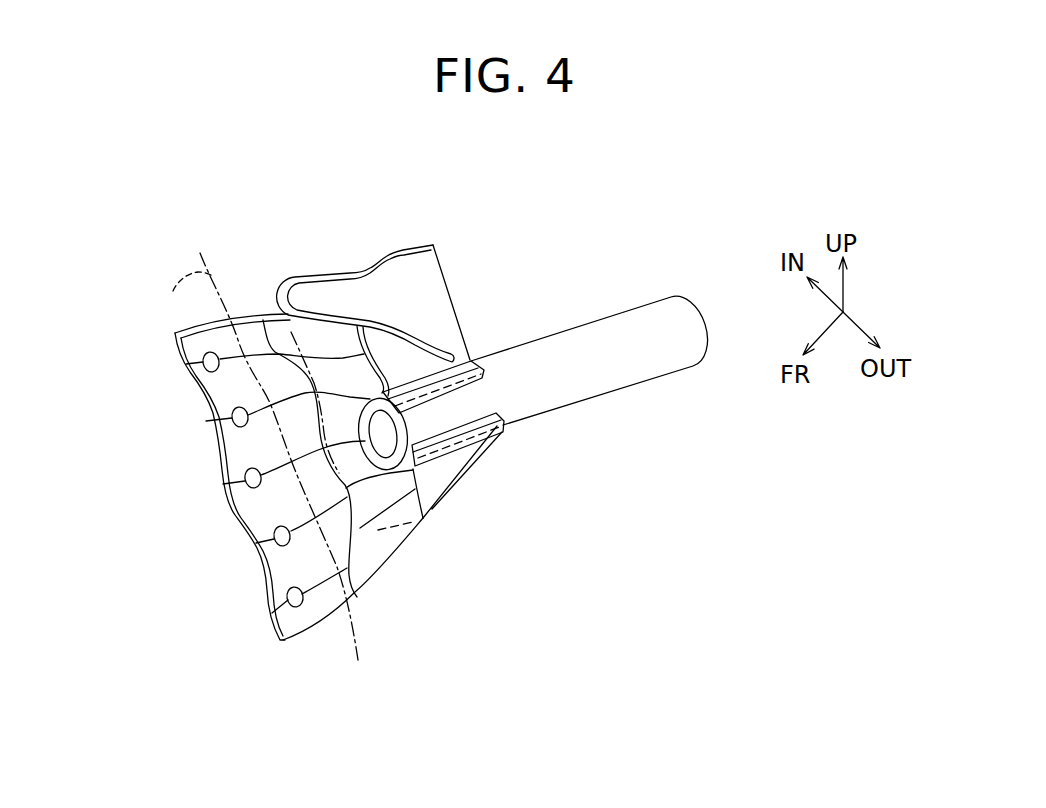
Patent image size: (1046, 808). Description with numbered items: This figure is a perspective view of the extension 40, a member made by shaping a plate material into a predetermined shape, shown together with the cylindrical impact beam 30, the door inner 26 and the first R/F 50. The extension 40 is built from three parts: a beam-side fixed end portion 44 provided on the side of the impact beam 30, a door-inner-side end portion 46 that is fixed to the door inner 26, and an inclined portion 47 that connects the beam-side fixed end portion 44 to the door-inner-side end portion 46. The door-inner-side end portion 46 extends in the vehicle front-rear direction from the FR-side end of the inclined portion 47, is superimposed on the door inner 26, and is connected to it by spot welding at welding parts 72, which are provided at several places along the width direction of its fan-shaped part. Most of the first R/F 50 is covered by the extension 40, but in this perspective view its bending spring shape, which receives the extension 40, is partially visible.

The door inner 26 is at (165, 295).
The impact beam 30 is at (615, 377).
The extension 40 is at (339, 524).
The beam-side fixed end portion 44 is at (451, 444).
The door-inner-side end portion 46 is at (327, 608).
The inclined portion 47 is at (385, 553).
The first R/F 50 is at (400, 250).
The welding parts 72 is at (274, 609).